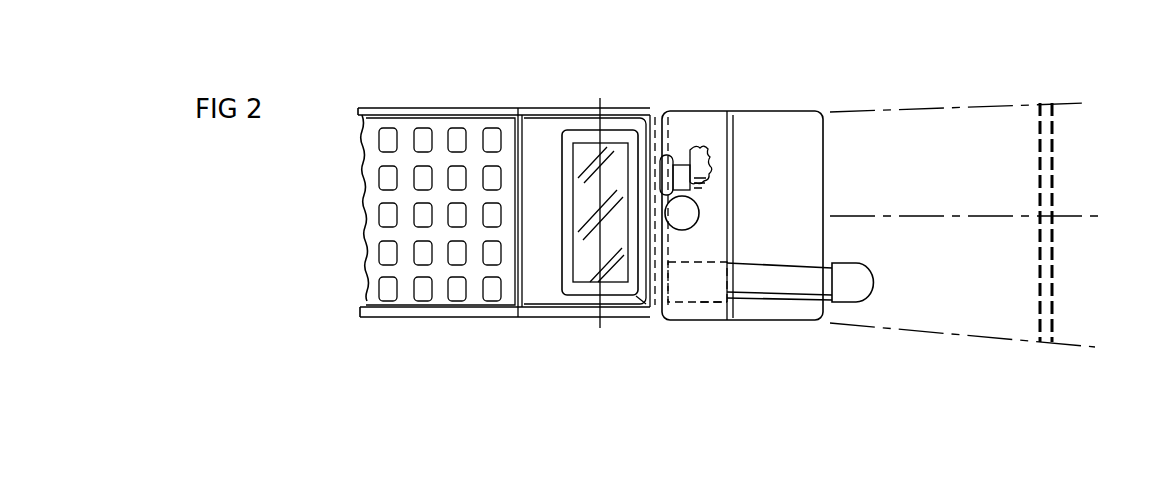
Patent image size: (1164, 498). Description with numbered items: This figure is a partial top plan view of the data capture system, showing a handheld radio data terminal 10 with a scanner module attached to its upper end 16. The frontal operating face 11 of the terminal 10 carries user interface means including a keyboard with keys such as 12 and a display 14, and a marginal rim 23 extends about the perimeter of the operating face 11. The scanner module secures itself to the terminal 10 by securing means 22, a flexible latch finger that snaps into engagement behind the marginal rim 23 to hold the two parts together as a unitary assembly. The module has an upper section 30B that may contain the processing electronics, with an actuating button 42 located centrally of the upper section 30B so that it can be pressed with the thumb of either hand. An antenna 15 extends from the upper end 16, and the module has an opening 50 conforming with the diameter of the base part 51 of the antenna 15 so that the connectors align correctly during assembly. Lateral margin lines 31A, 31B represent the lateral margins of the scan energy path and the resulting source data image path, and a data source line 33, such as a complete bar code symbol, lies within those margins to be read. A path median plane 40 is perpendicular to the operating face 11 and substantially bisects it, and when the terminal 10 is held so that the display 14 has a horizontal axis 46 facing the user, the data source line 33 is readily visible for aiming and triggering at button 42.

The handheld radio data terminal 10 is at (414, 325).
The frontal operating face 11 is at (375, 200).
The keys 12 is at (385, 292).
The display 14 is at (622, 146).
The antenna 15 is at (830, 272).
The upper end 16 is at (658, 112).
The securing means 22 is at (636, 305).
The marginal rim 23 is at (655, 314).
The upper section 30B is at (713, 118).
The lateral margin 31A is at (1087, 103).
The lateral margin 31B is at (1087, 346).
The data source line 33 is at (1056, 282).
The path median plane 40 is at (1102, 216).
The actuating button 42 is at (695, 208).
The horizontal axis 46 is at (598, 98).
The opening 50 is at (686, 312).
The base part 51 is at (714, 313).